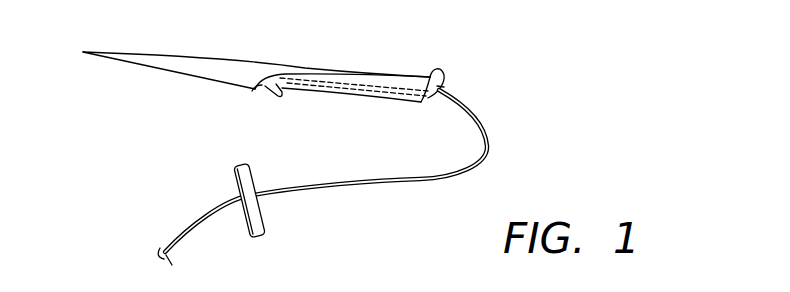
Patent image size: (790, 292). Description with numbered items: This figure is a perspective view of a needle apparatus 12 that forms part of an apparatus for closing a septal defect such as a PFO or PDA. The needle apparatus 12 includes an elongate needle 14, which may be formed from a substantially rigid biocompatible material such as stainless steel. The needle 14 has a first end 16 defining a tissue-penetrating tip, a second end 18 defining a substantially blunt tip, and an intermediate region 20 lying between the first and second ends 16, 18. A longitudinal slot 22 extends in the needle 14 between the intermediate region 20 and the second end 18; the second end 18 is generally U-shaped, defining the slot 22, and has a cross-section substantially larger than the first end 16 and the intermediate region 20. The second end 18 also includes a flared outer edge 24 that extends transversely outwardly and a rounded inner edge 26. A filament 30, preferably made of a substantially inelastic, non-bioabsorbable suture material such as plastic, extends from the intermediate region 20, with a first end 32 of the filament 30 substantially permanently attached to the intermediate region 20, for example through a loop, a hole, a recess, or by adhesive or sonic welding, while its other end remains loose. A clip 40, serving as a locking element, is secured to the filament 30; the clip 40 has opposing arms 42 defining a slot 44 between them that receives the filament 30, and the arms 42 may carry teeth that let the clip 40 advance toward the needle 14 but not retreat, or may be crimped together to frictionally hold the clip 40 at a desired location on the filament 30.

The needle apparatus 12 is at (295, 84).
The elongate needle 14 is at (297, 60).
The first end 16 is at (112, 59).
The second end 18 is at (417, 75).
The intermediate region 20 is at (252, 91).
The longitudinal slot 22 is at (445, 85).
The flared outer edge 24 is at (441, 74).
The rounded inner edge 26 is at (418, 103).
The filament 30 is at (363, 183).
The first end of the filament 32 is at (272, 97).
The clip 40 is at (280, 223).
The opposing arms 42 is at (243, 234).
The slot 44 is at (236, 192).